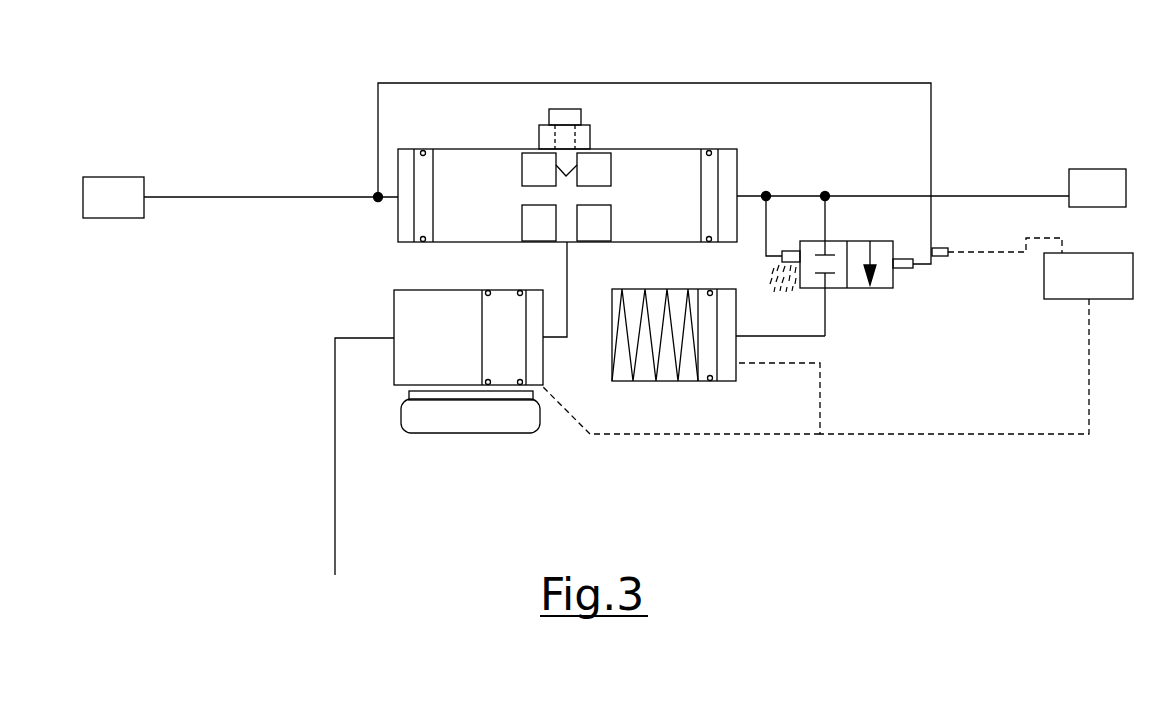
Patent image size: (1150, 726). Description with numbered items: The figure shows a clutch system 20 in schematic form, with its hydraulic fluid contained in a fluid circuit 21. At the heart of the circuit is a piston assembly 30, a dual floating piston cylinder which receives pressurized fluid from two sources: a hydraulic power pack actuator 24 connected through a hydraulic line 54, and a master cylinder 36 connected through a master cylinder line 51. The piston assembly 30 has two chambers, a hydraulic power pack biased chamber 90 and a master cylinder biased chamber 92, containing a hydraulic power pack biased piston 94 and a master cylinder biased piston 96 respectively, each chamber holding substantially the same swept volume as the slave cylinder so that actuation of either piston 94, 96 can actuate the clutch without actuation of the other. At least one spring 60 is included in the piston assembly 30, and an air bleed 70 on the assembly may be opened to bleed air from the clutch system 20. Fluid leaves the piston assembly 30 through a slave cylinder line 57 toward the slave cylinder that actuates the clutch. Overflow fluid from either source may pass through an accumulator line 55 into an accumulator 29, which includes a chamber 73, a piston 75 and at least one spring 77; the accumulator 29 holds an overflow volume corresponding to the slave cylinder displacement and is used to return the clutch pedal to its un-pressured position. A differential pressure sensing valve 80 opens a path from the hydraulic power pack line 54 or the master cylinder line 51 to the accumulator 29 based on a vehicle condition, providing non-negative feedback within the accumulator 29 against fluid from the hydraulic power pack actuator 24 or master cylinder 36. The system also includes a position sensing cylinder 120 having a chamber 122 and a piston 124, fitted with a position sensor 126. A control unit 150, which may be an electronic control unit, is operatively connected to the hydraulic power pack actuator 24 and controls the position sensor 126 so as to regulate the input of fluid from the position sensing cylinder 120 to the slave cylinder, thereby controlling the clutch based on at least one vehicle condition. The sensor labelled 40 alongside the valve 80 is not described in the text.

The clutch system 20 is at (955, 58).
The fluid circuit 21 is at (809, 83).
The hydraulic power pack actuator 24 is at (113, 197).
The accumulator 29 is at (703, 338).
The piston assembly 30 is at (548, 162).
The master cylinder 36 is at (1097, 188).
The pressure sensor 40 is at (940, 248).
The master cylinder line 51 is at (860, 196).
The hydraulic line 54 is at (333, 197).
The accumulator line 55 is at (812, 336).
The slave cylinder line 57 is at (335, 433).
The spring 60 is at (446, 165).
The air bleed 70 is at (547, 115).
The chamber 73 is at (625, 377).
The piston 75 is at (710, 293).
The spring 77 is at (647, 300).
The differential pressure sensing valve 80 is at (893, 288).
The hydraulic power pack biased chamber 90 is at (477, 165).
The master cylinder biased chamber 92 is at (660, 162).
The hydraulic power pack biased piston 94 is at (421, 150).
The master cylinder biased piston 96 is at (707, 150).
The position sensing cylinder 120 is at (408, 319).
The chamber 122 is at (406, 375).
The piston 124 is at (515, 373).
The position sensor 126 is at (542, 412).
The control unit 150 is at (838, 343).